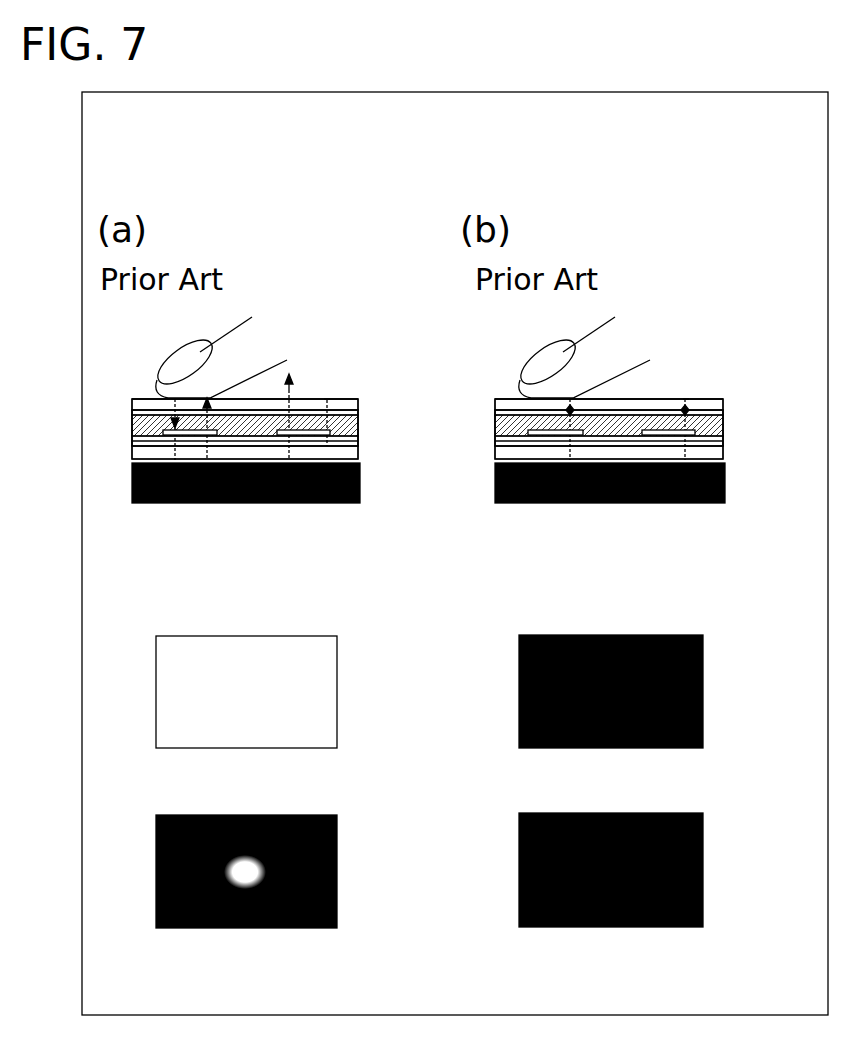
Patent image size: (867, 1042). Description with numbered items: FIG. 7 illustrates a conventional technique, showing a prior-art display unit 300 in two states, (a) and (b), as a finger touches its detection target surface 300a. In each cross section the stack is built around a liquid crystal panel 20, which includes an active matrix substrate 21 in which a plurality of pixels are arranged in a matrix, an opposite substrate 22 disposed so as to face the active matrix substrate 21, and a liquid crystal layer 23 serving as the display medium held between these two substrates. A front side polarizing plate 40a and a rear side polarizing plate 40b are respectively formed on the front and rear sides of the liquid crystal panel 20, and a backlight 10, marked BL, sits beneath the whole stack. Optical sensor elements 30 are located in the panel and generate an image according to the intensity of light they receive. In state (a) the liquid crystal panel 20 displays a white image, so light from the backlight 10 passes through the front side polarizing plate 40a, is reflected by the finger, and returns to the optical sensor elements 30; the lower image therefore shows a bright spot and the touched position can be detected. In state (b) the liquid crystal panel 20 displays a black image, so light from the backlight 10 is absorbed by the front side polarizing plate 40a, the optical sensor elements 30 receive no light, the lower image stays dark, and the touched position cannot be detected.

The conventional liquid crystal display unit 300 is at (340, 243).
The detection target surface 300a is at (342, 400).
The optical sensor elements 30 is at (326, 399).
The front side polarizing plate 40a is at (358, 404).
The opposite substrate 22 is at (358, 411).
The liquid crystal layer 23 is at (358, 428).
The active matrix substrate 21 is at (358, 443).
The liquid crystal panel 20 is at (398, 405).
The rear side polarizing plate 40b is at (358, 450).
The backlight 10 is at (346, 491).